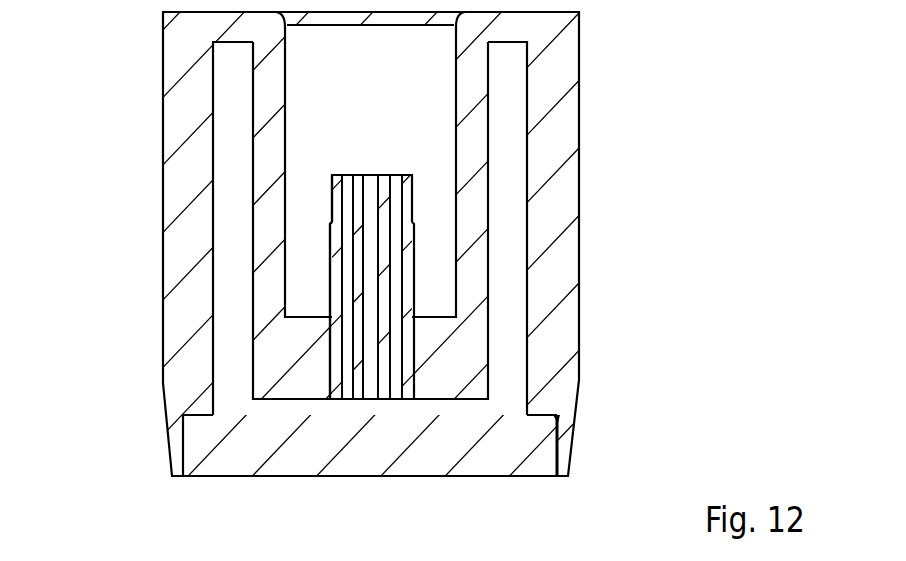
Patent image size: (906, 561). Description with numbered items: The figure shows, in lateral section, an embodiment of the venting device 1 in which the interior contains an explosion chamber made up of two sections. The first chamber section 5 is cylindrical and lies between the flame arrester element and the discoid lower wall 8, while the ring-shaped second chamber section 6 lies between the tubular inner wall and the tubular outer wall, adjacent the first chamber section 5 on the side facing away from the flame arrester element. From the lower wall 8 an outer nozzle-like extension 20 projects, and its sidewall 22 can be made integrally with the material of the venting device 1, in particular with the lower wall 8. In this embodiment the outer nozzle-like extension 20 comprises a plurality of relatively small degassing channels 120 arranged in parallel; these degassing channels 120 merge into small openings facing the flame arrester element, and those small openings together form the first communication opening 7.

The venting device 1 is at (131, 89).
The first chamber section 5 is at (508, 371).
The second chamber section 6 is at (508, 204).
The first communication opening 7 is at (369, 401).
The discoid lower wall 8 is at (423, 317).
The outer nozzle-like extension 20 is at (254, 223).
The sidewall 22 is at (330, 248).
The degassing channels 120 is at (347, 176).